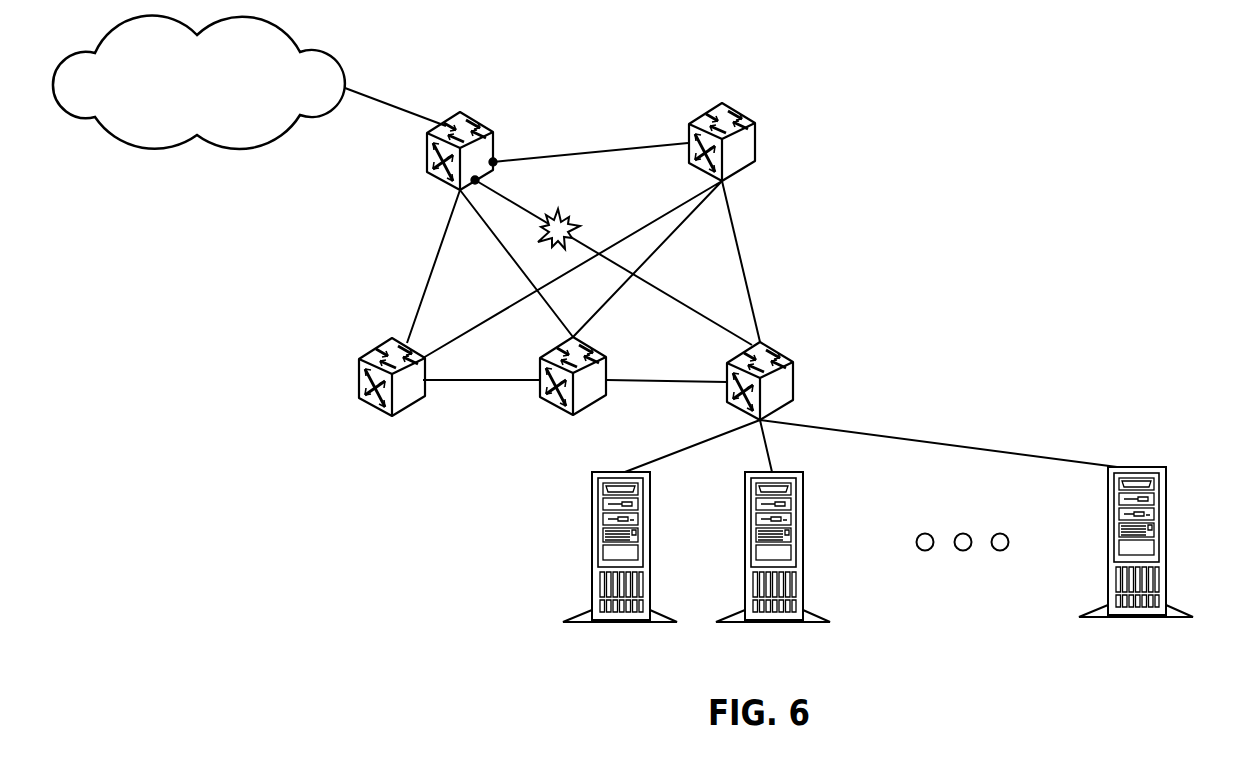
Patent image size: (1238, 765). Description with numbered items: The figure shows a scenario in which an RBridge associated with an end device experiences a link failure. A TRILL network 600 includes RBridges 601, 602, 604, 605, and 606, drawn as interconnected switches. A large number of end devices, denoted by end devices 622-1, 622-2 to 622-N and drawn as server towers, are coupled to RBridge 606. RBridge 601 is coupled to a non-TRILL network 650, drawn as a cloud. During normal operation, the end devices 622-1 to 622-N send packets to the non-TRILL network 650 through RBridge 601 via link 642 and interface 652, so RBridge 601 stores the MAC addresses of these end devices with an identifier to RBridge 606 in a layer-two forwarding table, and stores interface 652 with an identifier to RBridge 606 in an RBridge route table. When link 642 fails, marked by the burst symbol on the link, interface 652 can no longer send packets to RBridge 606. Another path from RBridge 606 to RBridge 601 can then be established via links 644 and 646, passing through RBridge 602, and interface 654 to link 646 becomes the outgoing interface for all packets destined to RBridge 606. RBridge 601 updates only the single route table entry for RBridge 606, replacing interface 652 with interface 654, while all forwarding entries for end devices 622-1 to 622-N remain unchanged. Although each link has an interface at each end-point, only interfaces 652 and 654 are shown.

The TRILL network 600 is at (827, 151).
The non-TRILL network 650 is at (249, 82).
The RBridge 601 is at (432, 176).
The RBridge 602 is at (696, 167).
The RBridge 604 is at (366, 404).
The RBridge 605 is at (539, 402).
The RBridge 606 is at (738, 403).
The link 642 is at (672, 305).
The link 644 is at (740, 257).
The link 646 is at (582, 139).
The interface 652 is at (478, 182).
The interface 654 is at (495, 159).
The end device 622-1 is at (650, 512).
The end device 622-2 is at (803, 512).
The end device 622-N is at (1165, 505).